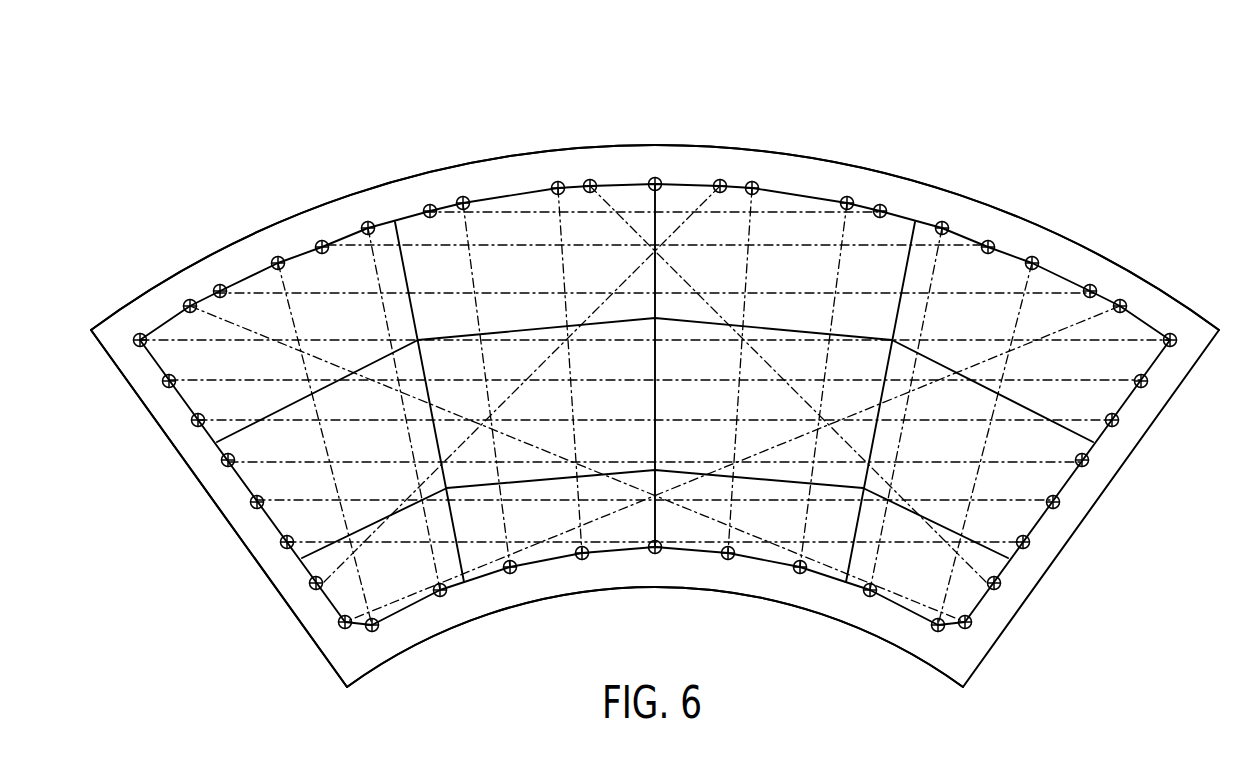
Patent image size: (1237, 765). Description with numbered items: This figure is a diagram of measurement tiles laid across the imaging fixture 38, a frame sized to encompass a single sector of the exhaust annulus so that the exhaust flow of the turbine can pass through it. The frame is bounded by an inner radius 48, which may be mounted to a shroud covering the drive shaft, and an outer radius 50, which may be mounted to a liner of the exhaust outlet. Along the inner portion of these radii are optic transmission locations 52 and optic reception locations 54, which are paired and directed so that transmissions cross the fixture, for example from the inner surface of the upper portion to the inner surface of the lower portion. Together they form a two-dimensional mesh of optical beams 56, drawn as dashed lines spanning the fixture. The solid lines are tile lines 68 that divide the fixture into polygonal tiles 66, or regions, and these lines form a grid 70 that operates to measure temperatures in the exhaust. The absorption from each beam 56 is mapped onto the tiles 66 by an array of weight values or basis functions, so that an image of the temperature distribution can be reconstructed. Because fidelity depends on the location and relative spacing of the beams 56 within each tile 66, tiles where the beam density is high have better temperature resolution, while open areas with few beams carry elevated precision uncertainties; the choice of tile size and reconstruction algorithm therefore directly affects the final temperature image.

The imaging fixture 38 is at (1003, 61).
The inner radius 48 is at (658, 557).
The outer radius 50 is at (913, 182).
The optic transmission locations 52 is at (657, 180).
The optic reception locations 54 is at (580, 592).
The optical beams 56 is at (777, 212).
The tiles 66 is at (1049, 315).
The tile lines 68 is at (404, 268).
The grid 70 is at (147, 420).